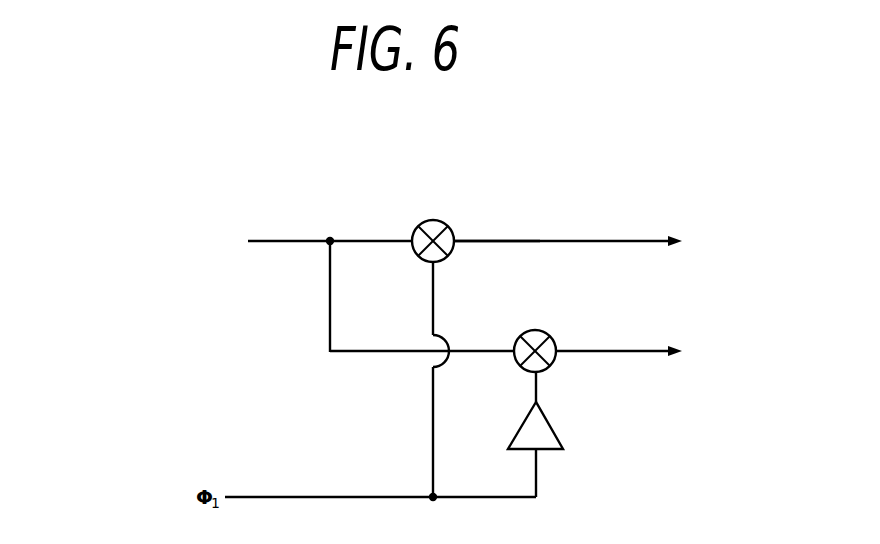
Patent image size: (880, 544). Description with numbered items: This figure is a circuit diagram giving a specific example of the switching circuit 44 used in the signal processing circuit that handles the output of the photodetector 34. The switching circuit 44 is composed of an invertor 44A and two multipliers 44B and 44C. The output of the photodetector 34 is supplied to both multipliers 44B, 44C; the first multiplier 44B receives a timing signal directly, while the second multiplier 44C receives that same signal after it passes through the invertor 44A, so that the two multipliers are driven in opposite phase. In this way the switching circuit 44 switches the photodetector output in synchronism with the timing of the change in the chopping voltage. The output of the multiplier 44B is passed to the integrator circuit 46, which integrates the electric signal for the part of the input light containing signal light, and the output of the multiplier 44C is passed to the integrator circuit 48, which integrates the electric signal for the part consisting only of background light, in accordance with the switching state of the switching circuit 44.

The photodetector 34 is at (148, 240).
The switching circuit 44 is at (544, 232).
The invertor 44A is at (553, 429).
The multiplier 44B is at (440, 219).
The multiplier 44C is at (540, 329).
The integrator circuit 46 is at (753, 245).
The integrator circuit 48 is at (753, 357).